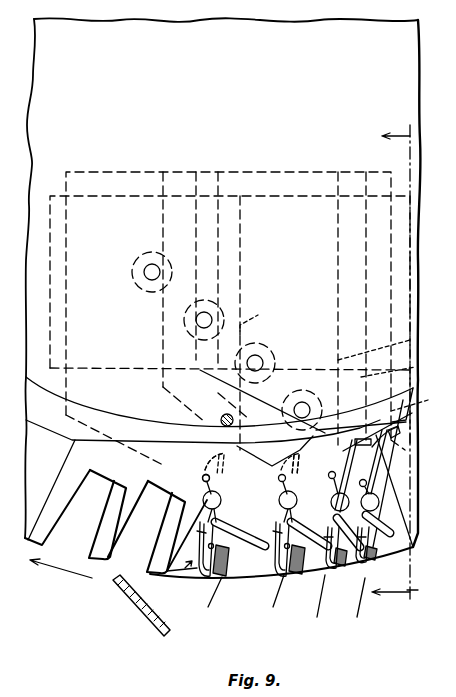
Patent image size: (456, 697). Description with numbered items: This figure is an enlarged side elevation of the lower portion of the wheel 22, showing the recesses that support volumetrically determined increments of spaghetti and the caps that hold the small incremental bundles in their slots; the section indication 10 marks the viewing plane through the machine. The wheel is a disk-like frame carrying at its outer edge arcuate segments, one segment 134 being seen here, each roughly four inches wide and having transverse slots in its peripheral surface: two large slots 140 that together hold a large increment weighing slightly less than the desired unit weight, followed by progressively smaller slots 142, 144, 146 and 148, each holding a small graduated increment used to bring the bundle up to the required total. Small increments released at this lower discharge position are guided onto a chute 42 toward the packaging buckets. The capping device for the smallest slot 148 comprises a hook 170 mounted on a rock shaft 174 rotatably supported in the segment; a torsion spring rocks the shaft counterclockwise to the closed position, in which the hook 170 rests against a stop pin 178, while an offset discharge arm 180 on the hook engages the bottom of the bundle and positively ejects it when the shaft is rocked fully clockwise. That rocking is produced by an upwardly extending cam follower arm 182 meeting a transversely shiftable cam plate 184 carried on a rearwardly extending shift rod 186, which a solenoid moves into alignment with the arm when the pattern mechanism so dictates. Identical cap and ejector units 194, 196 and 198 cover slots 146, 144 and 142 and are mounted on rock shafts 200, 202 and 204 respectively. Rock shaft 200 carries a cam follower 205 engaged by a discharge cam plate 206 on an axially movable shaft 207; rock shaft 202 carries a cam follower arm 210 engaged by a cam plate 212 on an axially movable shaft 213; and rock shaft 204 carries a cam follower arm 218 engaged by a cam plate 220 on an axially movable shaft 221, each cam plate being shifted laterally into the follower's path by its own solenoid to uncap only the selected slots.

The wheel 22 is at (408, 73).
The section line 10 is at (408, 361).
The axially movable shaft 221 is at (152, 264).
The axially movable shaft 213 is at (196, 321).
The cam plate 220 is at (265, 319).
The axially movable shaft 207 is at (258, 355).
The shift rod 186 is at (298, 402).
The cam plate 212 is at (410, 340).
The discharge cam plate 206 is at (415, 367).
The cam plate 184 is at (423, 401).
The cam follower arm 182 is at (393, 450).
The rock shaft 174 is at (379, 500).
The offset discharge arm 180 is at (348, 530).
The stop pin 178 is at (400, 560).
The cam follower arm 218 is at (210, 468).
The cam follower arm 210 is at (282, 468).
The cam follower 205 is at (318, 467).
The rock shaft 204 is at (191, 487).
The rock shaft 202 is at (282, 505).
The rock shaft 200 is at (335, 507).
The large slots 140 is at (100, 523).
The cap and ejector unit 198 is at (197, 570).
The cap and ejector unit 196 is at (264, 572).
The cap and ejector unit 194 is at (320, 570).
The hook 170 is at (324, 578).
The small increment slot 142 is at (204, 607).
The small increment slot 144 is at (276, 606).
The small increment slot 146 is at (332, 607).
The small increment slot 148 is at (370, 607).
The arcuate segment 134 is at (160, 568).
The chute 42 is at (167, 635).